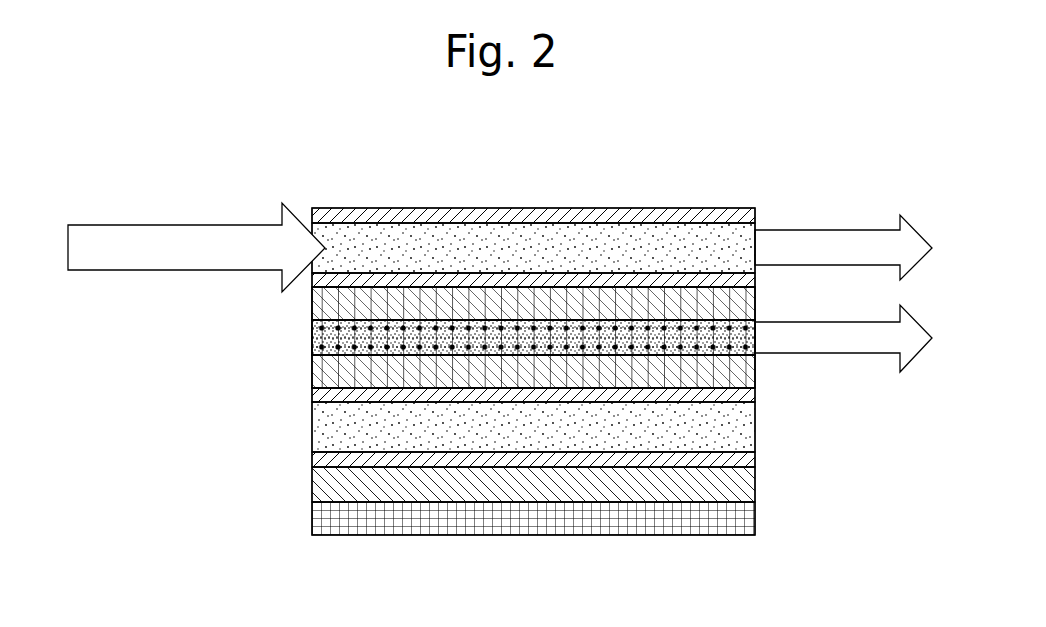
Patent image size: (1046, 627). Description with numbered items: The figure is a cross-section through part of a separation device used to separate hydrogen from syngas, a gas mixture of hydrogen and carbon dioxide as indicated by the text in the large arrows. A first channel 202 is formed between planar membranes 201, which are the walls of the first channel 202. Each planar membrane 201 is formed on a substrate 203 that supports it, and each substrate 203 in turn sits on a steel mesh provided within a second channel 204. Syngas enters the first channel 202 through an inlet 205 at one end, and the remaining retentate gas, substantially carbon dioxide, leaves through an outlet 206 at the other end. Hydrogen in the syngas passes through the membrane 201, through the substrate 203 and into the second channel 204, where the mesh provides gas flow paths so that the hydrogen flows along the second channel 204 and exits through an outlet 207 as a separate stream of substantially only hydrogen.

The planar membrane 201 is at (368, 208).
The first channel 202 is at (503, 243).
The substrate 203 is at (312, 302).
The second channel 204 is at (312, 338).
The inlet 205 is at (188, 223).
The outlet 206 is at (843, 230).
The outlet 207 is at (838, 355).